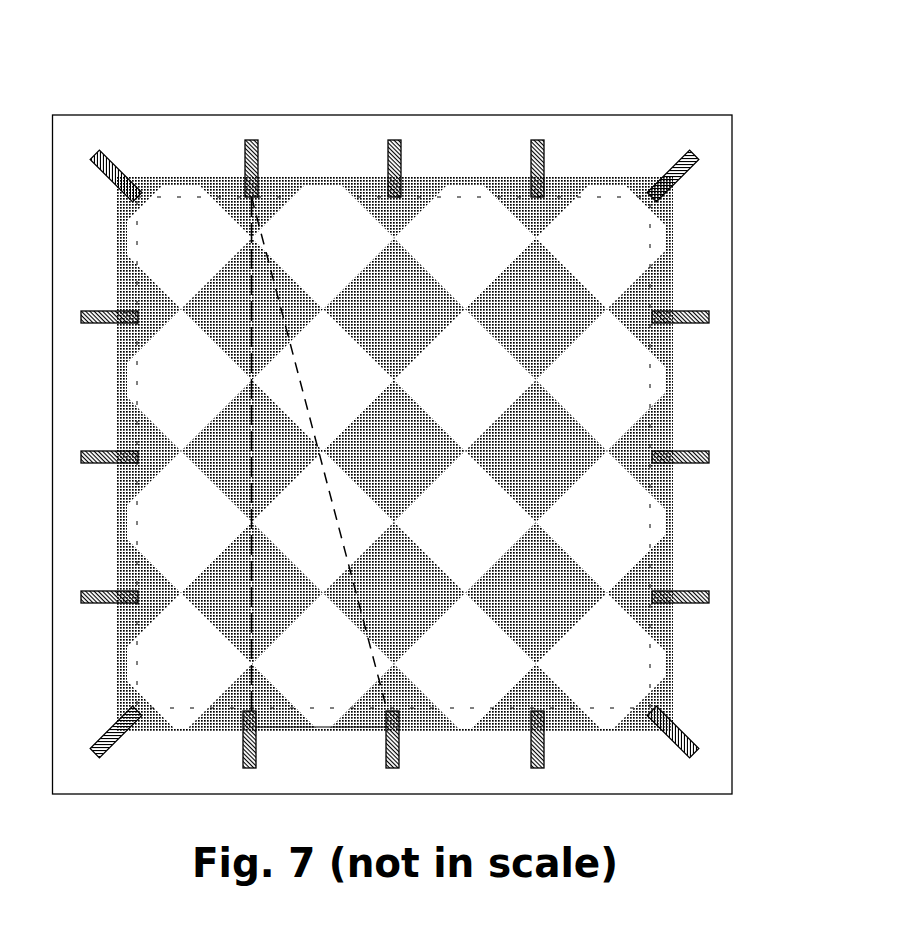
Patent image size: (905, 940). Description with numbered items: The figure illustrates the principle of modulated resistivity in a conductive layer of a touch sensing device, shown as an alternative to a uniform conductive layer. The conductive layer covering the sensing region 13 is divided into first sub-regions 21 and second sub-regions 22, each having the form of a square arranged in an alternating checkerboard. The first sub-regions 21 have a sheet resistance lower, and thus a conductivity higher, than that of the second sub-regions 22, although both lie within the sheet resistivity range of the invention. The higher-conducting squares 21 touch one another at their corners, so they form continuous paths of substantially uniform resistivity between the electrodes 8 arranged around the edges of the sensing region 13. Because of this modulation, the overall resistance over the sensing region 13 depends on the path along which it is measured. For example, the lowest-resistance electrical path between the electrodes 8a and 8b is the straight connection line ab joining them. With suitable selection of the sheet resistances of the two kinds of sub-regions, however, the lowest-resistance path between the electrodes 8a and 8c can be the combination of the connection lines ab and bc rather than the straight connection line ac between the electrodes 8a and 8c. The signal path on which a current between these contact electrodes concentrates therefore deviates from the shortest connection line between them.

The electrodes 8 is at (402, 156).
The electrode 8a is at (228, 158).
The electrode 8b is at (227, 753).
The electrode 8c is at (372, 753).
The sensing region 13 is at (562, 407).
The first sub-regions 21 is at (313, 237).
The second sub-regions 22 is at (390, 290).
The connection line ab is at (248, 562).
The connection line ac is at (307, 408).
The connection line bc is at (268, 727).